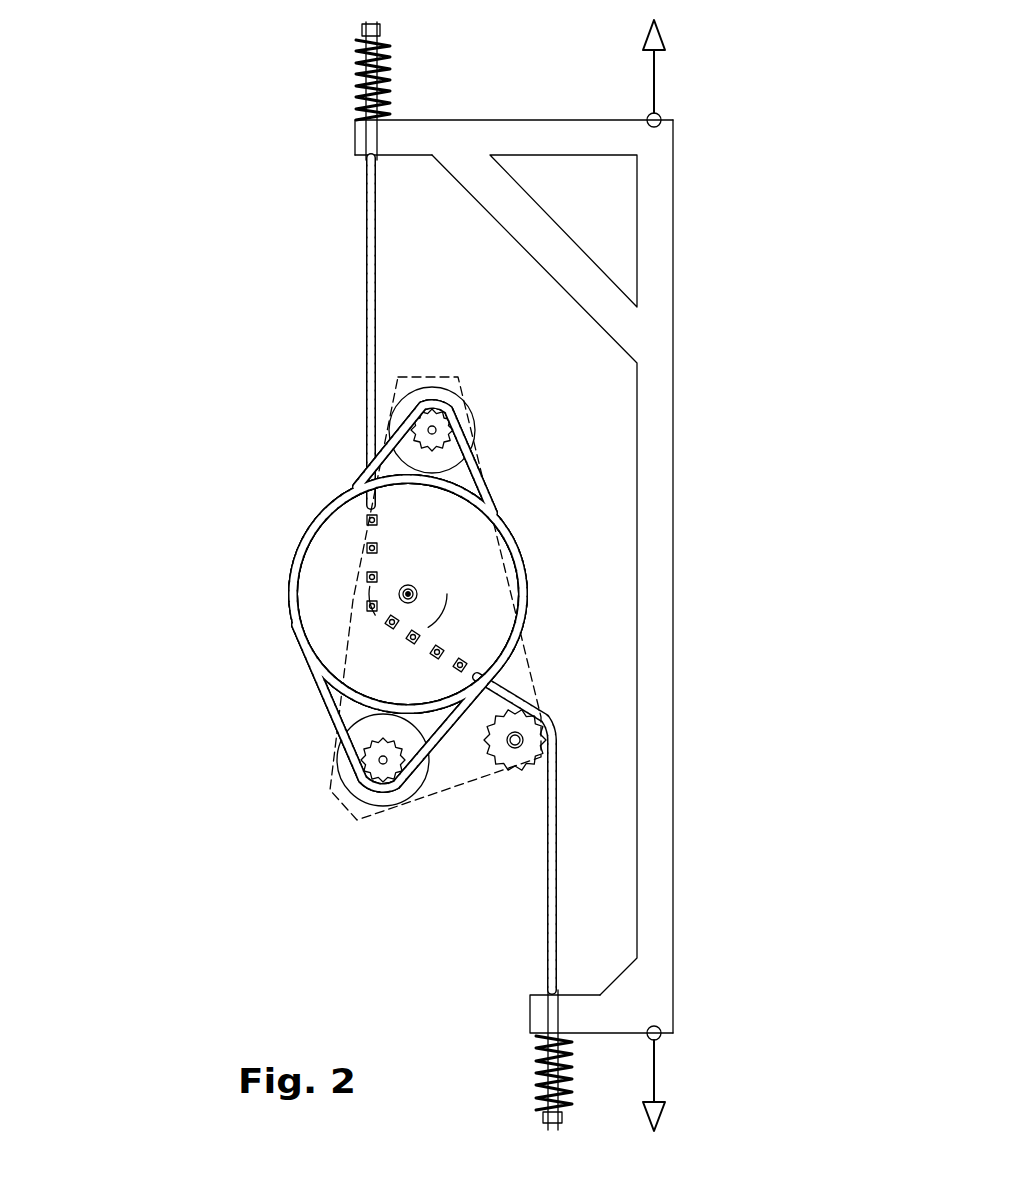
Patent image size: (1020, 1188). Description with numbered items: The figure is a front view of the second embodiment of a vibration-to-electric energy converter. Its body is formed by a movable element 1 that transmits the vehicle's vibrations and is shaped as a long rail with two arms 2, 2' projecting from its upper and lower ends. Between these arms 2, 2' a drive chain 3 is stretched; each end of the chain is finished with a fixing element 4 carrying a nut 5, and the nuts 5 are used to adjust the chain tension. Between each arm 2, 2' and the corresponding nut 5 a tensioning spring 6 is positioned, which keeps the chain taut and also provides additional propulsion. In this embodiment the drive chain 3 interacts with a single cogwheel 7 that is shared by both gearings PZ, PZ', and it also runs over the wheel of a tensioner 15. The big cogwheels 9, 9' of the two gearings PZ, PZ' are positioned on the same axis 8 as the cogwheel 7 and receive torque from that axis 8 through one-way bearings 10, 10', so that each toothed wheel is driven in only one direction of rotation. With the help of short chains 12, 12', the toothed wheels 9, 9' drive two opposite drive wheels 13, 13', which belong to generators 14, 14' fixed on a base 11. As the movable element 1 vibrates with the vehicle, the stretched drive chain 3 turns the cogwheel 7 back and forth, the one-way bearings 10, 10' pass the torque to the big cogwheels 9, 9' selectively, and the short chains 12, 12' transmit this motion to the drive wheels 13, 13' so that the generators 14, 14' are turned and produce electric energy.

The movable element 1 is at (657, 237).
The arm 2 is at (514, 98).
The arm 2' is at (560, 988).
The drive chain 3 is at (365, 318).
The fixing element 4 is at (366, 160).
The nut 5 is at (362, 37).
The tensioning spring 6 is at (357, 88).
The cogwheel 7 is at (382, 612).
The axis 8 is at (398, 598).
The big cogwheel 9 is at (366, 602).
The big cogwheel 9' is at (366, 602).
The one-way bearing 10 is at (290, 572).
The one-way bearing 10' is at (290, 572).
The base 11 is at (452, 776).
The short chain 12 is at (362, 458).
The short chain 12' is at (358, 706).
The drive wheel 13 is at (342, 399).
The drive wheel 13' is at (312, 774).
The generator 14 is at (353, 385).
The generator 14' is at (324, 786).
The tensioner 15 is at (522, 740).
The gearing PZ is at (340, 596).
The gearing PZ' is at (340, 596).